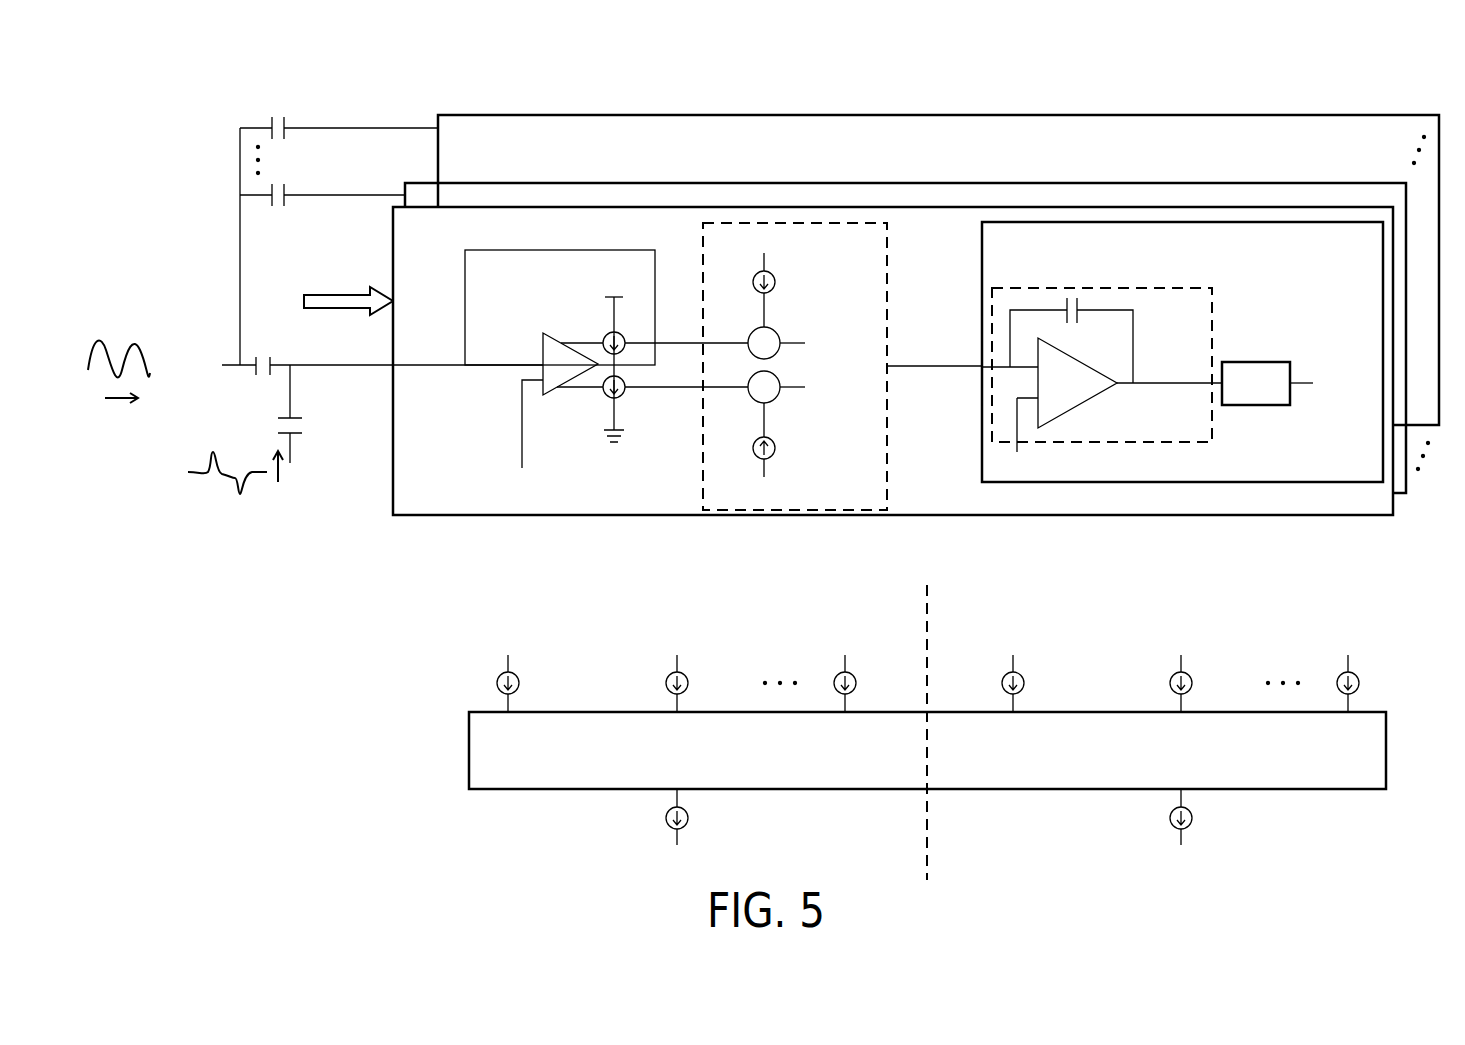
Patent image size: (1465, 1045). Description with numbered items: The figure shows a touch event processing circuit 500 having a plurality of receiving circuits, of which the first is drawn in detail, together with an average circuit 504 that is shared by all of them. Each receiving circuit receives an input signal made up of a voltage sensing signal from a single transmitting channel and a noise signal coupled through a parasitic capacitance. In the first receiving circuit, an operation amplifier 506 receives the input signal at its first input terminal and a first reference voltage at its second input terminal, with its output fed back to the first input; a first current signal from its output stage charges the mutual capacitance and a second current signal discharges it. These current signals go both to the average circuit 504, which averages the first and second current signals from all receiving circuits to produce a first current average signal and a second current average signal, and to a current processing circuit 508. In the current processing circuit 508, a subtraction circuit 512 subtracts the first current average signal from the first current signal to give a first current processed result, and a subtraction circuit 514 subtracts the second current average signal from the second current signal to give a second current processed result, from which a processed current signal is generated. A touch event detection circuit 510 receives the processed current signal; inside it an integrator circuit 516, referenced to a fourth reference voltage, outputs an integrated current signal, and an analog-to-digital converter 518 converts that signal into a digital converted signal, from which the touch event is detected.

The touch event processing circuit 500 is at (1088, 87).
The average circuit 504 is at (1386, 750).
The operation amplifier 506 is at (543, 342).
The current processing circuit 508 is at (829, 367).
The touch event detection circuit 510 is at (1182, 369).
The subtraction circuit 512 is at (776, 333).
The subtraction circuit 514 is at (776, 397).
The integrator circuit 516 is at (1212, 322).
The ADC 518 is at (1257, 405).